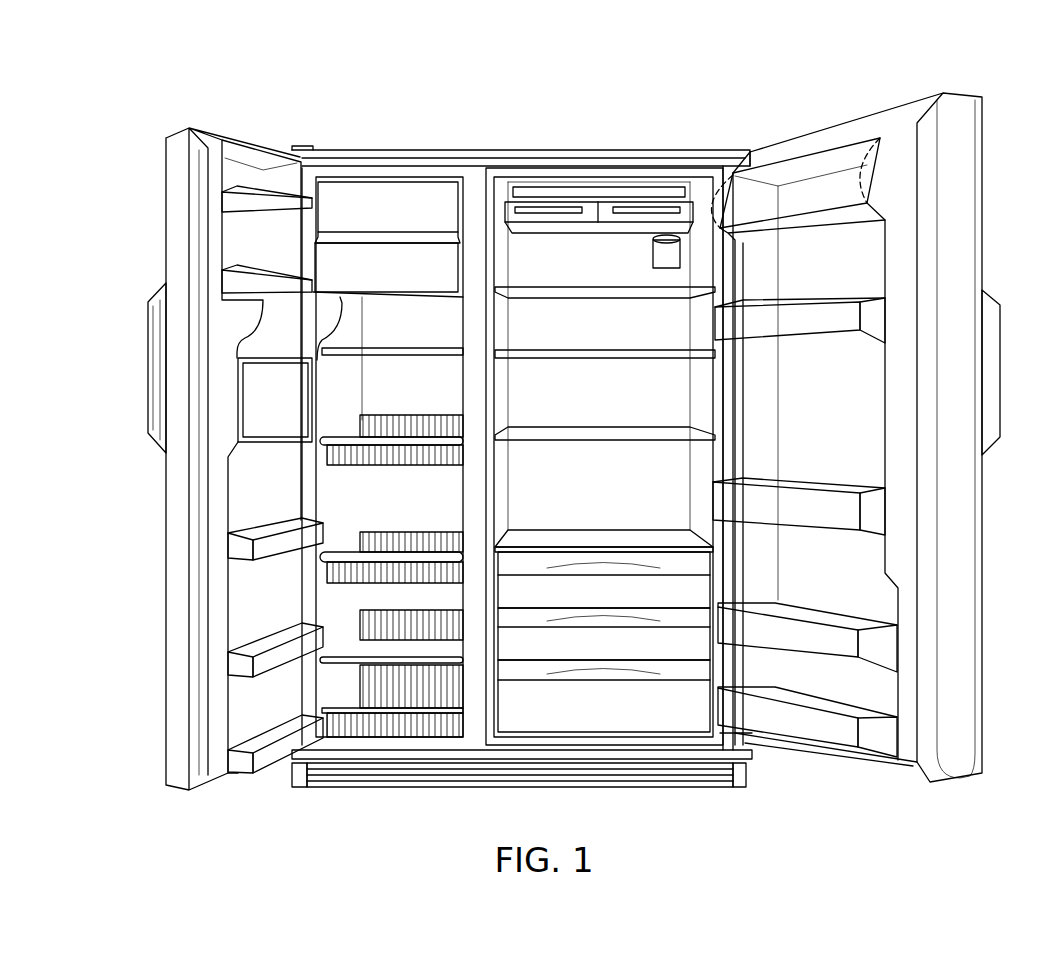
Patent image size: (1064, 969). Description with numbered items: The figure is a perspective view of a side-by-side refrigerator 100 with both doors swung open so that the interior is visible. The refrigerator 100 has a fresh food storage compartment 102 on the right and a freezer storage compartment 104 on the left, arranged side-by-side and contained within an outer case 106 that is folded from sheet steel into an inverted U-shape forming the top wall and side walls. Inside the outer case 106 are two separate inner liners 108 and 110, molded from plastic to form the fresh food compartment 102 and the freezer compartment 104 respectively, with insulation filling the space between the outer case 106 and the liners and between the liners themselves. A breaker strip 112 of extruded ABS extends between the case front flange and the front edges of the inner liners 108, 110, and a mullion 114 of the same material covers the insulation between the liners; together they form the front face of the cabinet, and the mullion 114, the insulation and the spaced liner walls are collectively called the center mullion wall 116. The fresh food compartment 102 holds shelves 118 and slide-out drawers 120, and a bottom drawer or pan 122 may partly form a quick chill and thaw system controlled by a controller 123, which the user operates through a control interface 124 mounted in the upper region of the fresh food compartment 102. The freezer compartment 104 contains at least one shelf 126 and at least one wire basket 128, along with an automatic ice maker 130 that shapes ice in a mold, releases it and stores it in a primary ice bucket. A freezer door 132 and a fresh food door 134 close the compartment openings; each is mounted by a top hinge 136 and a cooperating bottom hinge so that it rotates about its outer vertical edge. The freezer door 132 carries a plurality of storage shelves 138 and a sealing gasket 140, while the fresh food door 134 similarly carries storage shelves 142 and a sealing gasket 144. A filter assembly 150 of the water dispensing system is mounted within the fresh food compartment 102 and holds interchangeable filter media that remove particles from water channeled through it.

The refrigerator 100 is at (430, 40).
The fresh food storage compartment 102 is at (702, 174).
The freezer storage compartment 104 is at (428, 196).
The outer case 106 is at (580, 136).
The inner liner 108 is at (613, 182).
The inner liner 110 is at (368, 177).
The breaker strip 112 is at (648, 160).
The mullion 114 is at (478, 420).
The center mullion wall 116 is at (515, 388).
The shelves 118 is at (560, 300).
The slide-out drawers 120 is at (622, 601).
The bottom drawer or pan 122 is at (622, 725).
The controller 123 is at (572, 207).
The control interface 124 is at (520, 188).
The shelf 126 is at (392, 360).
The wire basket 128 is at (345, 548).
The automatic ice maker 130 is at (392, 272).
The freezer door 132 is at (154, 190).
The fresh food door 134 is at (996, 150).
The top hinge 136 is at (300, 148).
The storage shelves 138 is at (230, 550).
The sealing gasket 140 is at (210, 140).
The storage shelves 142 is at (795, 492).
The sealing gasket 144 is at (890, 118).
The filter assembly 150 is at (652, 255).